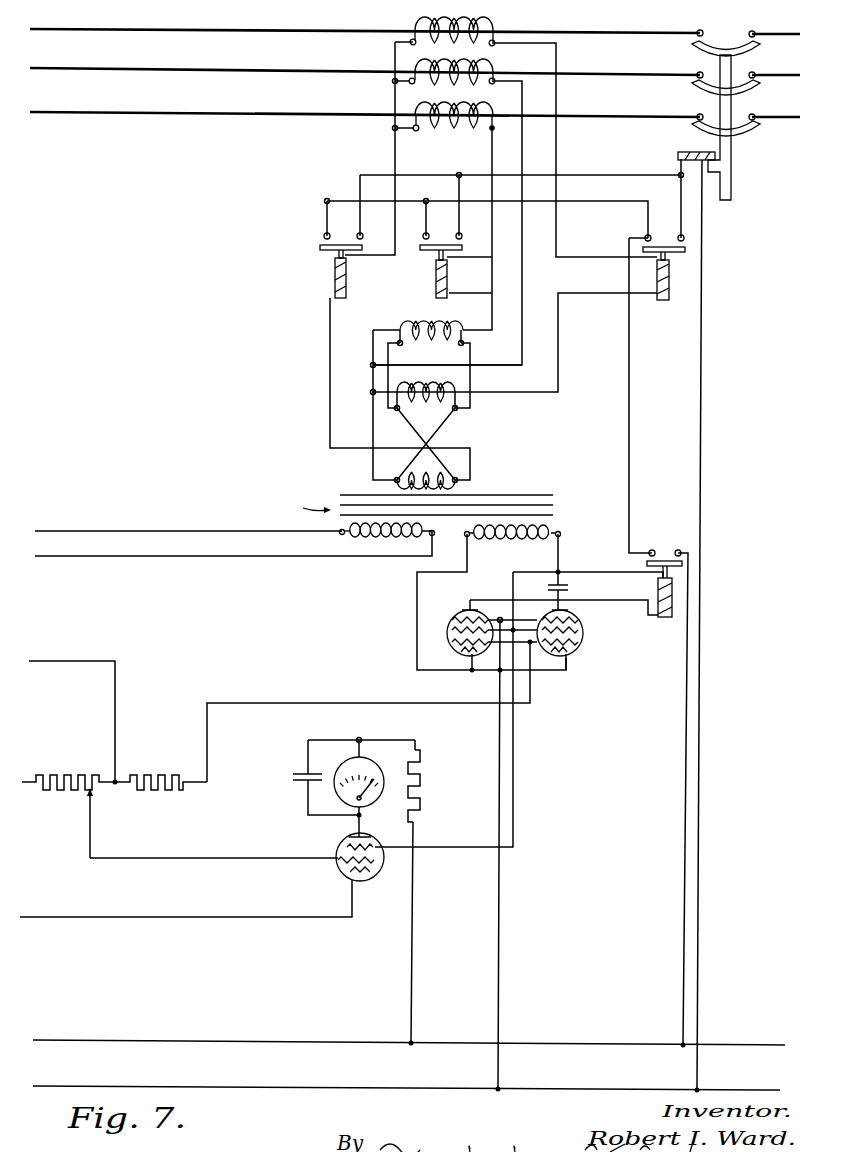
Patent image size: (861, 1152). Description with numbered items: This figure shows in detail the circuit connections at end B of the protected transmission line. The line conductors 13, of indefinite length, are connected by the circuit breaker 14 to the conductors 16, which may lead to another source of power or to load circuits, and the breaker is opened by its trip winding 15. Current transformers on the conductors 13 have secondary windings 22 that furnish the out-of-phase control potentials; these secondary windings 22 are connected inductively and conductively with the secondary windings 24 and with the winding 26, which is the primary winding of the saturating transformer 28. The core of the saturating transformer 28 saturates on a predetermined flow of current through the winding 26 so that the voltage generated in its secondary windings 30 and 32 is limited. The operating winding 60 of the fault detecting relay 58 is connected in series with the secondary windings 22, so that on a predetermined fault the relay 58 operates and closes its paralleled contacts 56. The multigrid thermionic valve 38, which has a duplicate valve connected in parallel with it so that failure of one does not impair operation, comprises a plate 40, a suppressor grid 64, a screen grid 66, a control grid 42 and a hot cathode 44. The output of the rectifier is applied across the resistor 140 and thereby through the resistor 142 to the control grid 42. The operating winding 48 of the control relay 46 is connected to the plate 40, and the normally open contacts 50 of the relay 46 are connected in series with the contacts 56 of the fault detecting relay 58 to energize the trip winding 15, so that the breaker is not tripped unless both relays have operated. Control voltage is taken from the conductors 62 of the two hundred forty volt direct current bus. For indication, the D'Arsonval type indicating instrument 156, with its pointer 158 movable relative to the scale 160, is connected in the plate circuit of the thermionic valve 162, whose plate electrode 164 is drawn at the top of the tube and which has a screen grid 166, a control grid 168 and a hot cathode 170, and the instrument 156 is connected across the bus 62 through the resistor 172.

The conductors 13 is at (95, 28).
The secondary windings 22 is at (494, 23).
The conductors 16 is at (794, 34).
The circuit breaker 14 is at (728, 39).
The trip winding 15 is at (693, 151).
The contacts 56 is at (343, 236).
The fault detecting relay 58 is at (309, 264).
The operating winding 60 is at (348, 290).
The secondary windings 24 is at (430, 372).
The winding 26 is at (462, 489).
The saturating transformer 28 is at (532, 484).
The secondary winding 32 is at (385, 538).
The secondary winding 30 is at (480, 541).
The contacts 50 is at (666, 548).
The operating winding 48 is at (657, 593).
The control relay 46 is at (670, 630).
The thermionic valve 38 is at (450, 606).
The plate 40 is at (479, 611).
The suppressor grid 64 is at (452, 620).
The screen grid 66 is at (452, 630).
The control grid 42 is at (452, 642).
The hot cathode 44 is at (461, 652).
The resistor 140 is at (68, 776).
The resistor 142 is at (163, 776).
The indicating instrument 156 is at (370, 757).
The scale 160 is at (348, 765).
The pointer 158 is at (366, 790).
The resistor 172 is at (421, 779).
The thermionic valve 162 is at (371, 888).
The anode 164 is at (372, 837).
The screen grid 166 is at (347, 843).
The control grid 168 is at (338, 855).
The hot cathode 170 is at (348, 871).
The conductors 62 is at (370, 1039).